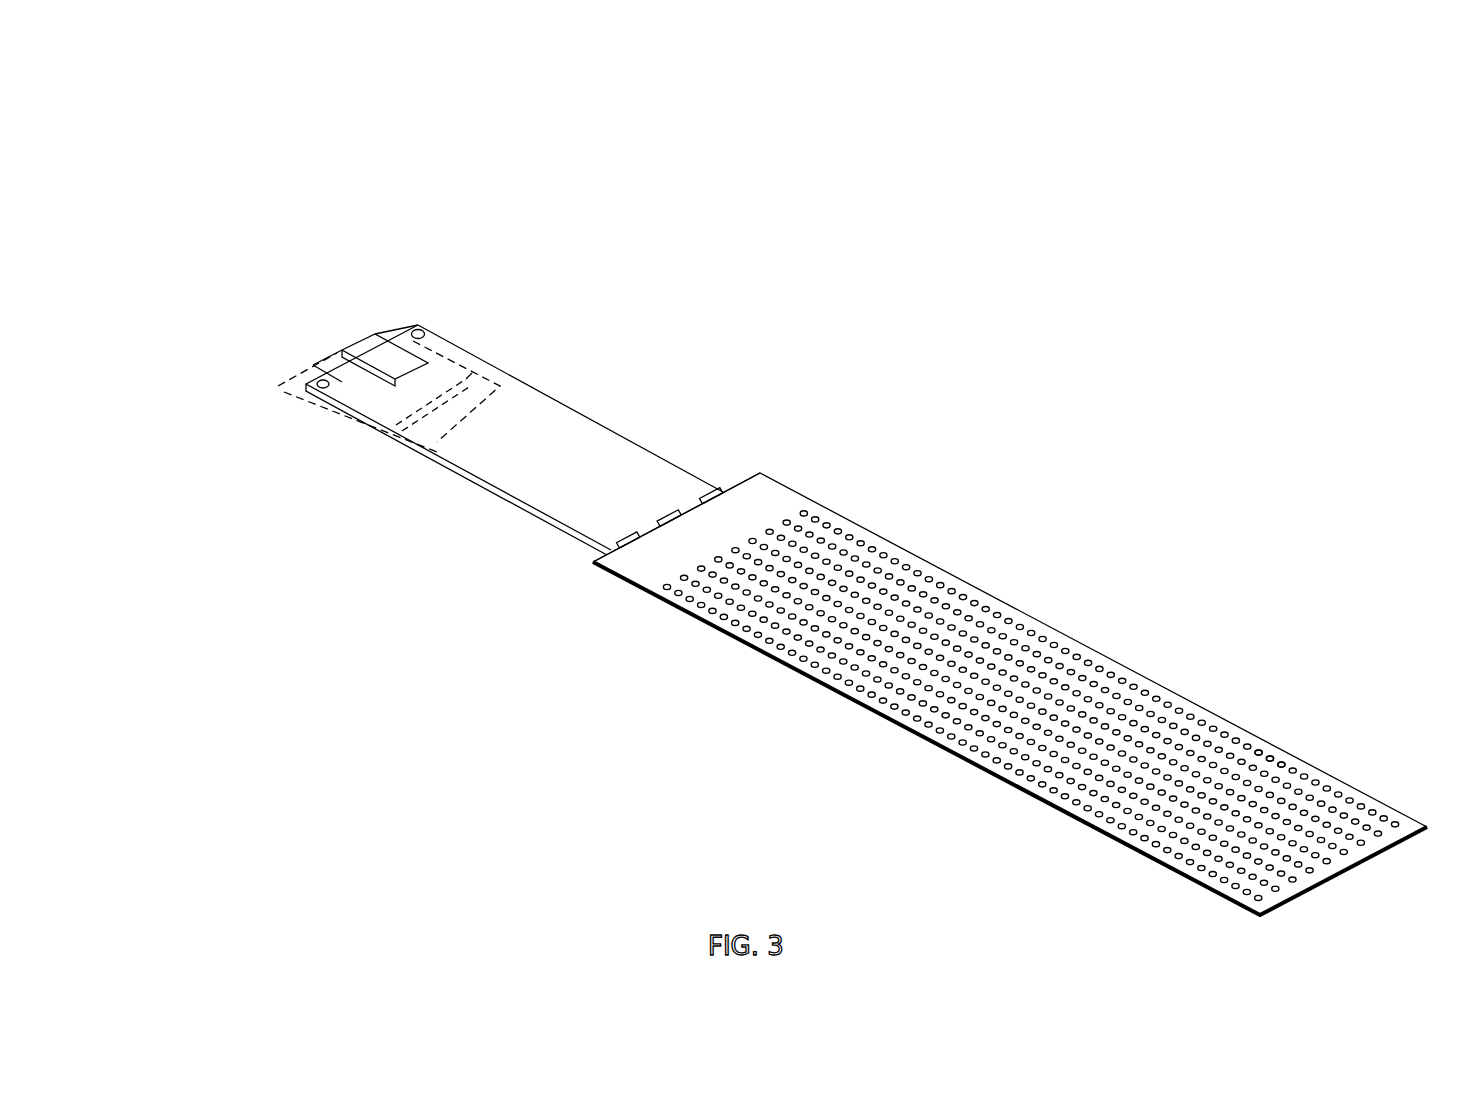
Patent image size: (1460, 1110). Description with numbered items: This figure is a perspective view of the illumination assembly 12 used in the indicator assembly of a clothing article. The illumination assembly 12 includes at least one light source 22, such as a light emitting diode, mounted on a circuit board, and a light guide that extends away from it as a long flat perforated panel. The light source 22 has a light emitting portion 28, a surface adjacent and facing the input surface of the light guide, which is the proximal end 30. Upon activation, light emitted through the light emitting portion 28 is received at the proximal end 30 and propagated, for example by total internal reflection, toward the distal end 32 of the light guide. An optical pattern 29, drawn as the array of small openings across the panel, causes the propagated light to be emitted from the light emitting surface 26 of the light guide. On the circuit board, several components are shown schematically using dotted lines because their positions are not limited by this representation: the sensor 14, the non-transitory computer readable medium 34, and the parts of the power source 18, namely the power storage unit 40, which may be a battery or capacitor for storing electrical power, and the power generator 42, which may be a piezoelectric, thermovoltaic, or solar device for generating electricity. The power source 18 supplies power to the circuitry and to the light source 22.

The illumination assembly 12 is at (1245, 937).
The sensor 14 is at (432, 373).
The power source 18 is at (468, 380).
The light source 22 is at (712, 497).
The light emitting surface 26 is at (1020, 706).
The light emitting portion 28 is at (742, 489).
The optical pattern 29 is at (1286, 763).
The proximal end 30 is at (592, 557).
The distal end 32 is at (1362, 866).
The non-transitory computer readable medium 34 is at (505, 405).
The power storage unit 40 is at (402, 383).
The power generator 42 is at (370, 387).